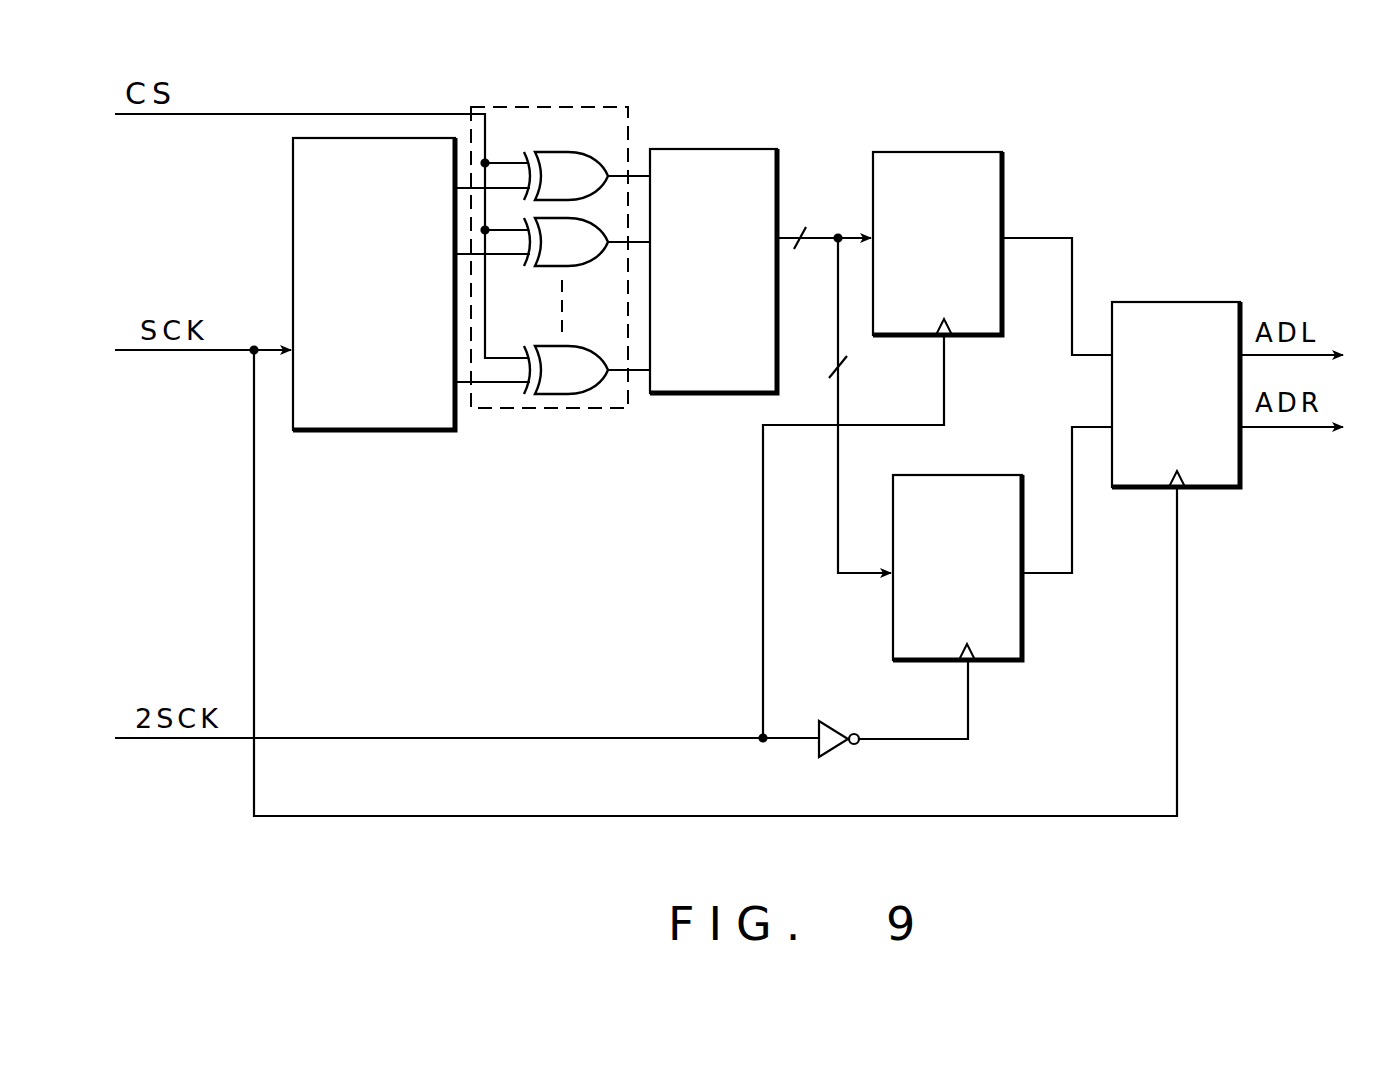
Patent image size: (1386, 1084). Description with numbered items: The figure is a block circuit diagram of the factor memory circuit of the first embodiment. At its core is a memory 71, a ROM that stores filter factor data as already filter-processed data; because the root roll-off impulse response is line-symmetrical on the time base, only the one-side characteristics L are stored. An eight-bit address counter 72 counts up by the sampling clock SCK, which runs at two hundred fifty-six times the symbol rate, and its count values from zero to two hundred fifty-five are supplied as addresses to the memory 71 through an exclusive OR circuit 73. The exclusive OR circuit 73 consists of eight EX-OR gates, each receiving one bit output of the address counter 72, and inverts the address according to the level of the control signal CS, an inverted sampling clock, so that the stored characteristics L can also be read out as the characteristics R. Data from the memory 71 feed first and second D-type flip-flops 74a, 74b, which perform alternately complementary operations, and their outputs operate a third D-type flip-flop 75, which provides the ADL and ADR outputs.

The memory 71 is at (724, 148).
The address counter 72 is at (400, 432).
The exclusive OR circuit 73 is at (556, 410).
The first D-type flip-flop 74a is at (951, 152).
The second D-type flip-flop 74b is at (982, 475).
The third D-type flip-flop 75 is at (1190, 300).